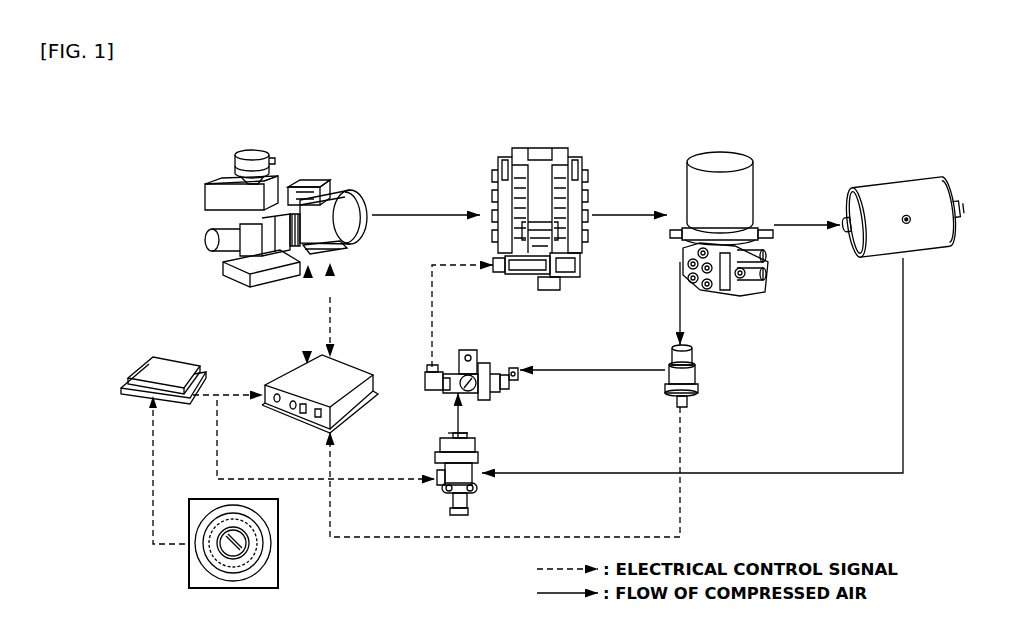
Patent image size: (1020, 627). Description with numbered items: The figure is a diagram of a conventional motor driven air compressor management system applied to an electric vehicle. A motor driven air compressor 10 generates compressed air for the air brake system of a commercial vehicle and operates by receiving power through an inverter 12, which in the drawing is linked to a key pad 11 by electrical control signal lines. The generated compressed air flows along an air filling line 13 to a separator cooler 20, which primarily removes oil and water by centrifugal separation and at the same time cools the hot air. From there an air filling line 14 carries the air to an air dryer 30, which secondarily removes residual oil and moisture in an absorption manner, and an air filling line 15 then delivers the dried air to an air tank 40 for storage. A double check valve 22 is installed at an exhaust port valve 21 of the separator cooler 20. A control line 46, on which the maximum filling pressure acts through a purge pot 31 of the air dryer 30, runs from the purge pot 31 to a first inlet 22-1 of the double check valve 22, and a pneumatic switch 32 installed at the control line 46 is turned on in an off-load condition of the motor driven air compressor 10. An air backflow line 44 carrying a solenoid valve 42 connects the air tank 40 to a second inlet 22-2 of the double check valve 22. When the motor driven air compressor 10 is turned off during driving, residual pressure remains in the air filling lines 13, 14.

The motor driven air compressor 10 is at (335, 200).
The key pad / input device 11 is at (163, 366).
The inverter 12 is at (290, 378).
The air filling line 13 is at (426, 212).
The air filling line 14 is at (626, 212).
The air filling line 15 is at (800, 222).
The separator cooler 20 is at (556, 158).
The exhaust port valve 21 is at (517, 272).
The double check valve 22 is at (482, 366).
The first inlet 22-1 is at (513, 368).
The second inlet 22-2 is at (472, 391).
The air dryer 30 is at (716, 160).
The purge pot 31 is at (678, 262).
The pneumatic switch 32 is at (695, 357).
The air tank 40 is at (892, 190).
The solenoid valve 42 is at (477, 458).
The air backflow line 44 is at (773, 472).
The control line 46 is at (680, 310).